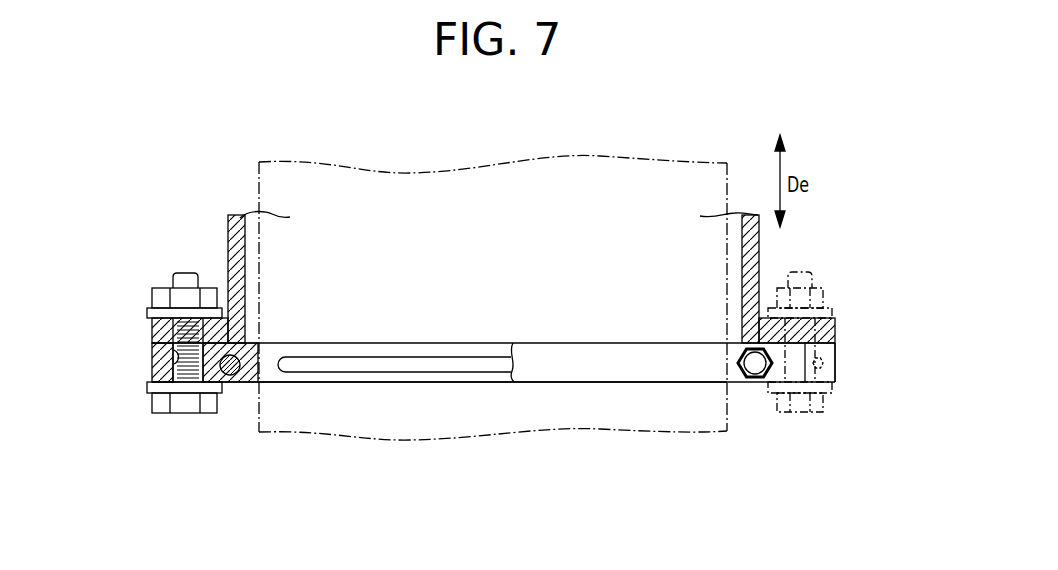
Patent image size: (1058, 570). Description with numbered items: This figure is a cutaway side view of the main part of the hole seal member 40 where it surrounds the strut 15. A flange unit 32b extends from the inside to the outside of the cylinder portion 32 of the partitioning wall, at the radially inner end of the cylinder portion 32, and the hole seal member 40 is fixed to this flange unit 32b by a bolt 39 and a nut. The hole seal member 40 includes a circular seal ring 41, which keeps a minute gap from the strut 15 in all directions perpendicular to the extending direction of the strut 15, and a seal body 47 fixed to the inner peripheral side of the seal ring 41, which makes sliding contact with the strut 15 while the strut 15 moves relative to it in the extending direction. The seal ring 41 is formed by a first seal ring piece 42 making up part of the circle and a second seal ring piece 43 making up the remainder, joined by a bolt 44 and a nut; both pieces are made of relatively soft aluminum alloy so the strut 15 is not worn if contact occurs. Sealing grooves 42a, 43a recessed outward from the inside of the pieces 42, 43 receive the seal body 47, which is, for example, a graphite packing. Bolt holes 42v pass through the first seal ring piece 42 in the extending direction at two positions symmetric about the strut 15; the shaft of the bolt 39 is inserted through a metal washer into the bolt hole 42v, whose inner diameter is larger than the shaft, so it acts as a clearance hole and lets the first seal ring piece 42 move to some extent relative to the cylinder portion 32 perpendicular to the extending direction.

The strut 15 is at (315, 431).
The cylinder portion 32 is at (752, 260).
The flange unit 32b is at (160, 332).
The bolt 39 is at (188, 274).
The hole seal member 40 is at (222, 440).
The circular seal ring 41 is at (835, 425).
The first seal ring piece 42 is at (160, 368).
The bolt hole 42v is at (175, 356).
The sealing groove 42a is at (418, 357).
The sealing groove 43a is at (394, 364).
The second seal ring piece 43 is at (827, 370).
The bolt 44 is at (753, 372).
The seal body 47 is at (385, 362).